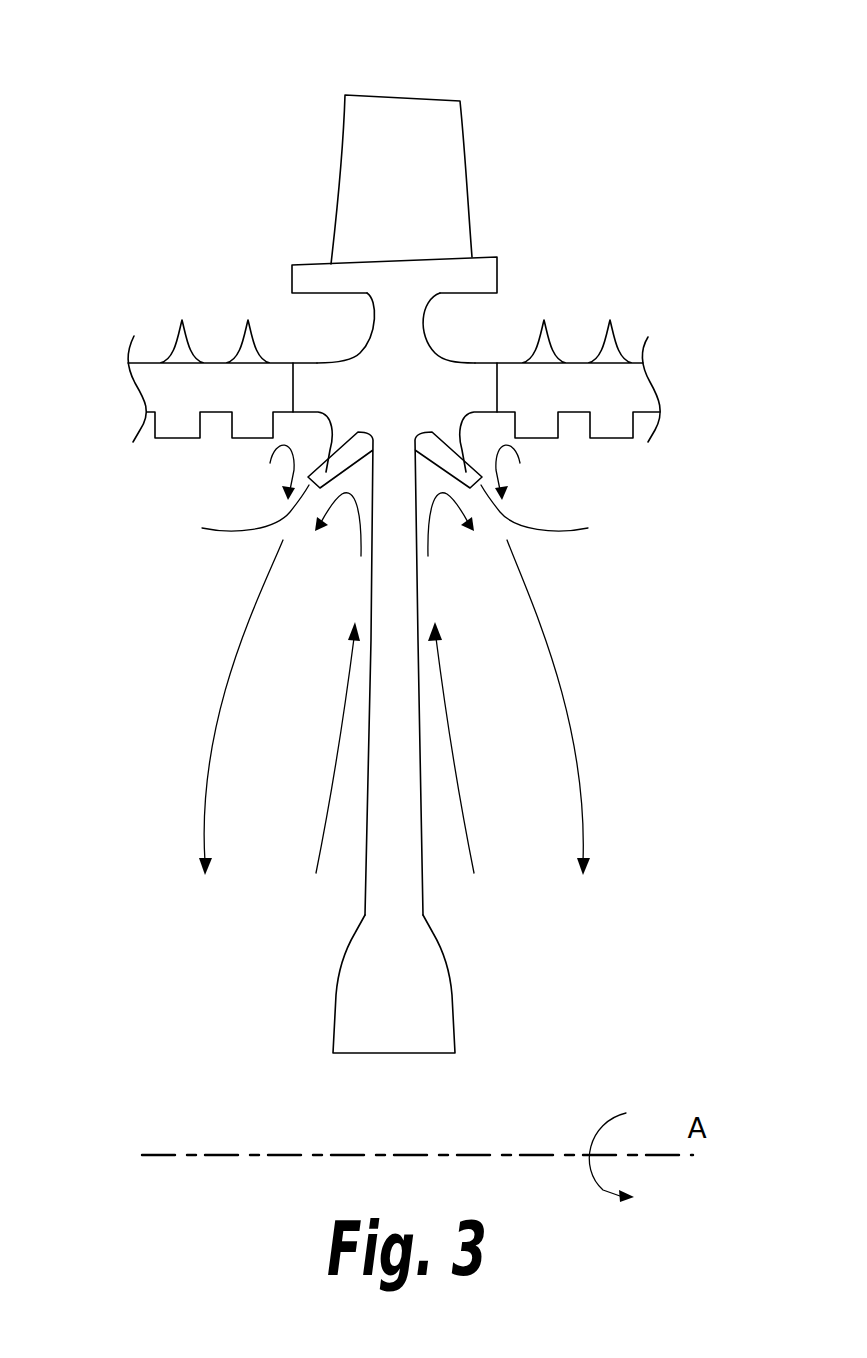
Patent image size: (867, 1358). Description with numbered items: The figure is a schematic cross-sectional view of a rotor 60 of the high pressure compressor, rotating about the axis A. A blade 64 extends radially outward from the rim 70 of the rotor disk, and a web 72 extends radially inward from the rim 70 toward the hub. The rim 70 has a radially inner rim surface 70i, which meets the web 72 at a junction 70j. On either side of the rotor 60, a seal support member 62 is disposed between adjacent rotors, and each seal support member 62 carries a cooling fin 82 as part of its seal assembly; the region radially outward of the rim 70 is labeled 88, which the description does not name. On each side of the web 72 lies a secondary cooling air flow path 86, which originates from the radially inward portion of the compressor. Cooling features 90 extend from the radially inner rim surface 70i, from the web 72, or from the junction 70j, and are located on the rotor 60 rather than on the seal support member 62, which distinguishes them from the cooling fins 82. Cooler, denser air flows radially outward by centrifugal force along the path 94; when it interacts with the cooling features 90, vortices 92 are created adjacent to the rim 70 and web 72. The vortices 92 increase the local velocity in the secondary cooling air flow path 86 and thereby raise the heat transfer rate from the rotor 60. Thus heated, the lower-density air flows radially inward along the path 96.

The rotor 60 is at (235, 972).
The seal support member 62 is at (198, 308).
The blade 64 is at (468, 127).
The rim 70 is at (317, 360).
The radially inner rim surface 70i is at (318, 412).
The junction 70j is at (358, 432).
The web 72 is at (418, 598).
The cooling fin 82 is at (170, 443).
The secondary cooling air flow path 86 is at (87, 669).
The hot gas path 88 is at (280, 57).
The cooling feature 90 is at (392, 513).
The vortex 92 is at (271, 451).
The path 94 is at (330, 820).
The path 96 is at (218, 717).